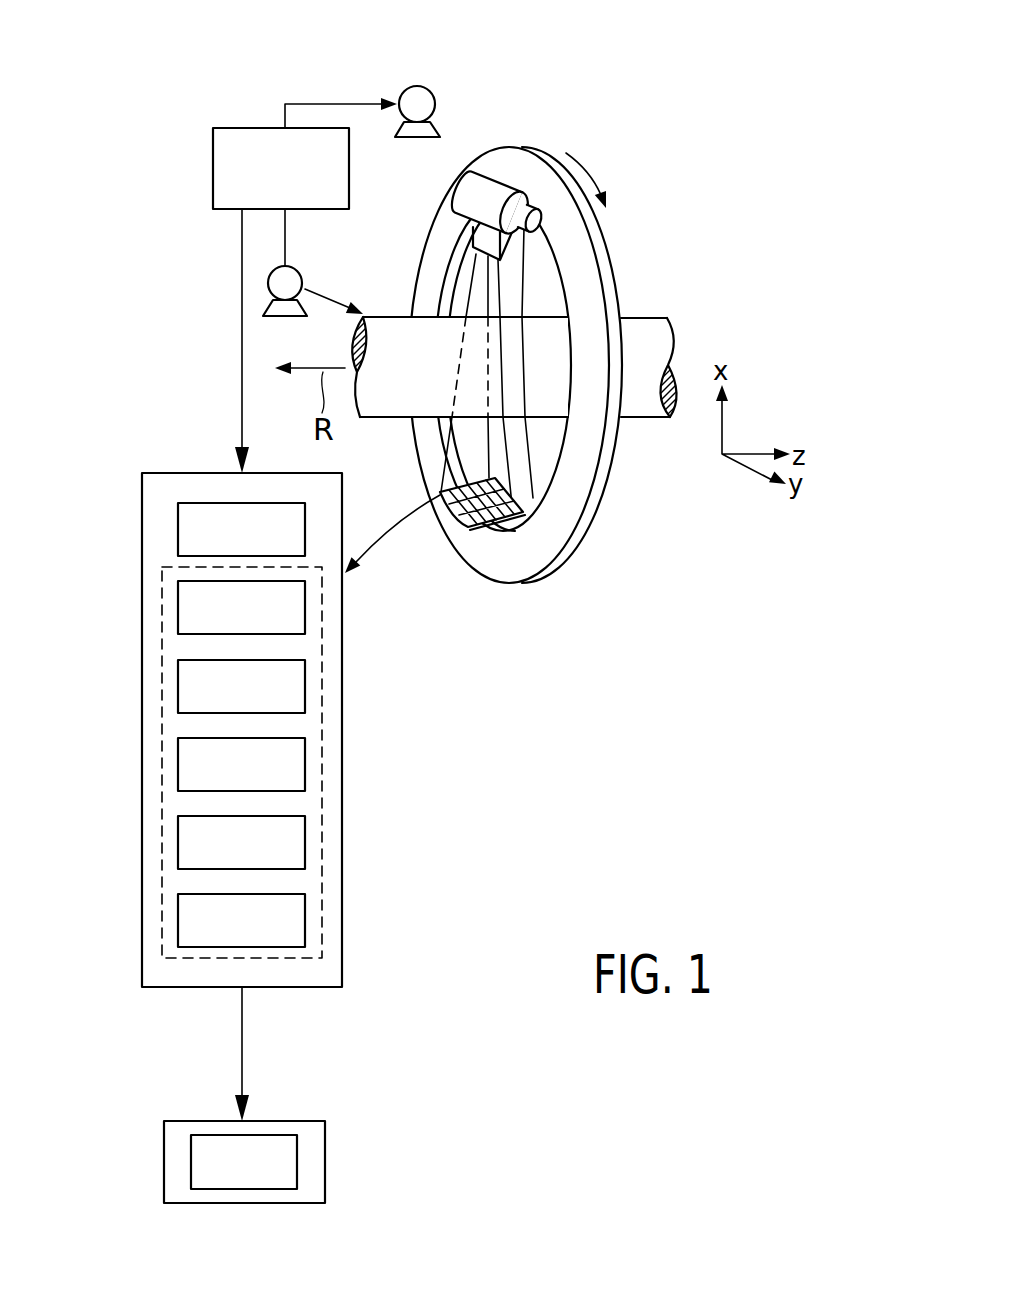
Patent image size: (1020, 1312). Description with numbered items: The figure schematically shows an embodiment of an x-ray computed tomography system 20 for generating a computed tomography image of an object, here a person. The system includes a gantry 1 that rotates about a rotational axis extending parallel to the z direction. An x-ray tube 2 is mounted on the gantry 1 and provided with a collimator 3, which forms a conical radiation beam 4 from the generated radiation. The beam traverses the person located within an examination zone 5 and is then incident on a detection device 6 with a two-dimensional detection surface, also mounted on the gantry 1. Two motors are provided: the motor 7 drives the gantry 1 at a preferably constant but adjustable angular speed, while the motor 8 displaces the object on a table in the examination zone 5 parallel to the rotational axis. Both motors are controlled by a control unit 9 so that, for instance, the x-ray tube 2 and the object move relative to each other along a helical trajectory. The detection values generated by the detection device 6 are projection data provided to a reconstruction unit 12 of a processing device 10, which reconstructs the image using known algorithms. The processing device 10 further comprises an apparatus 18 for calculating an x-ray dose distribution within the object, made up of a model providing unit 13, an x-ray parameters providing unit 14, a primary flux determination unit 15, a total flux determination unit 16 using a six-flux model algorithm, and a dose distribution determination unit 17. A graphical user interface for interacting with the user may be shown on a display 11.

The gantry 1 is at (568, 512).
The x-ray tube 2 is at (487, 192).
The collimator 3 is at (513, 237).
The radiation beam 4 is at (505, 462).
The examination zone 5 is at (389, 317).
The detection device 6 is at (470, 535).
The motor 7 is at (431, 86).
The motor 8 is at (303, 277).
The control unit 9 is at (226, 128).
The processing device 10 is at (342, 673).
The display 11 is at (164, 1162).
The reconstruction unit 12 is at (178, 531).
The model providing unit 13 is at (178, 611).
The x-ray parameters providing unit 14 is at (178, 688).
The primary flux determination unit 15 is at (178, 766).
The total flux determination unit 16 is at (178, 843).
The dose distribution determination unit 17 is at (178, 919).
The apparatus for calculating an x-ray dose distribution 18 is at (322, 757).
The computed tomography system 20 is at (554, 341).